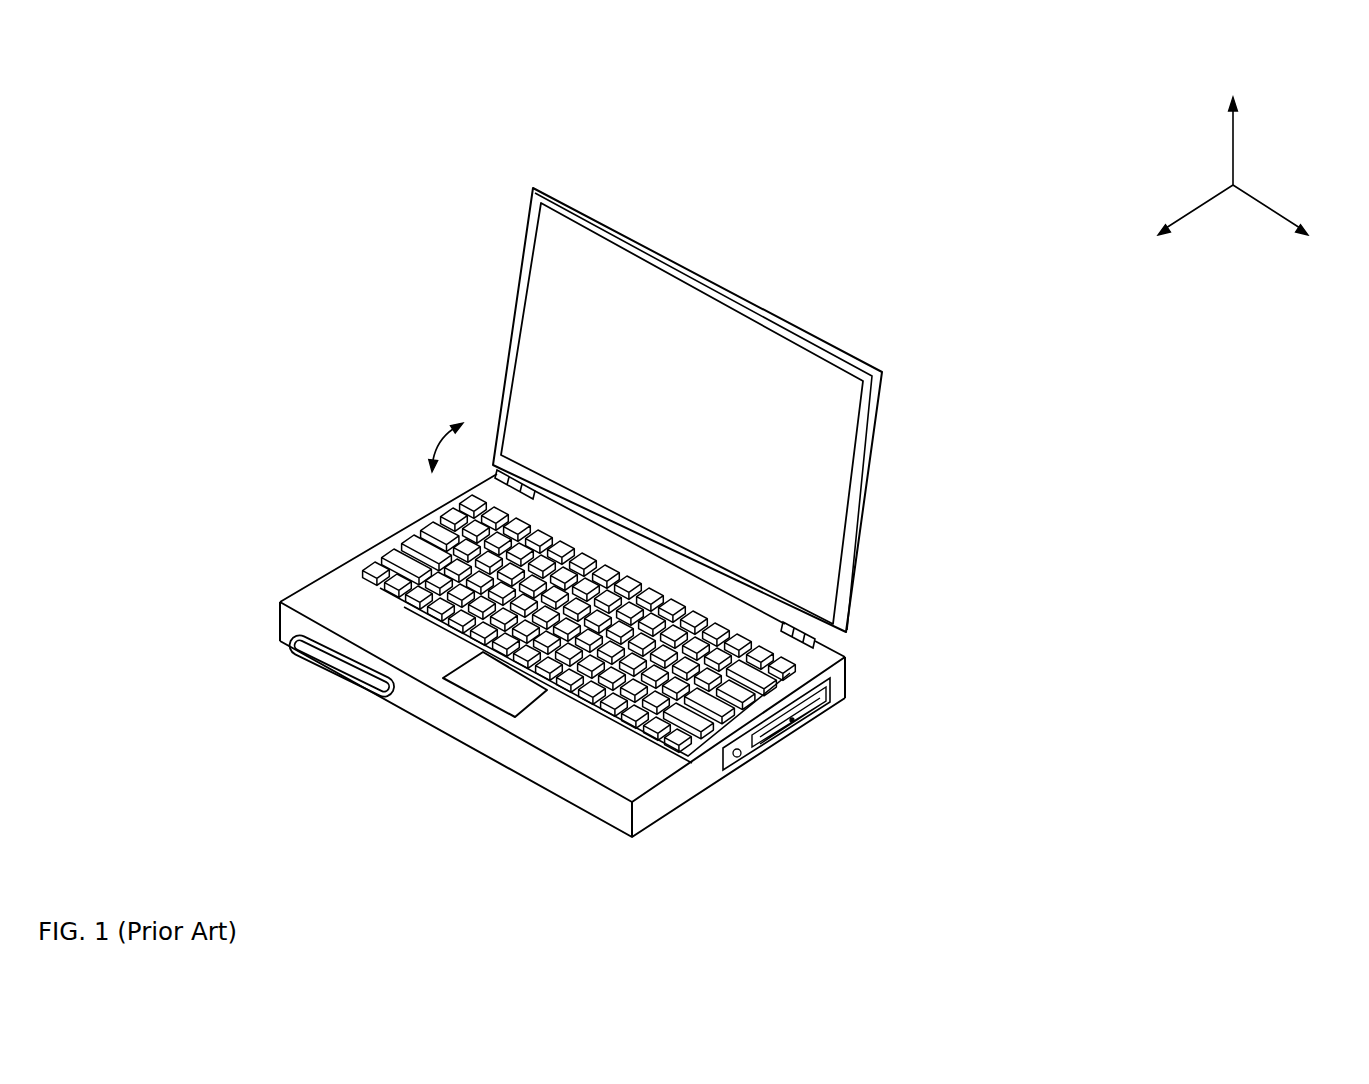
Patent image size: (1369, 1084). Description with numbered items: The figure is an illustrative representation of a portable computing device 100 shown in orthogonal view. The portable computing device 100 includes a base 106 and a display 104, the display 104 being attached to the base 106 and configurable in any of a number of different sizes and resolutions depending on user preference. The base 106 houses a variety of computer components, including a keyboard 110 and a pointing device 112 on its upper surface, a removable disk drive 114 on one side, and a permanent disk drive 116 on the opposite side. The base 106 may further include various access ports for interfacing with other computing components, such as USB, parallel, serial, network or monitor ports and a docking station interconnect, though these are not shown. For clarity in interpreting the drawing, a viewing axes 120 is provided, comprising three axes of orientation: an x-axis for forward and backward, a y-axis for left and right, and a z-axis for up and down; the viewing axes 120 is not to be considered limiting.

The portable computing device 100 is at (409, 216).
The display 104 is at (818, 333).
The base 106 is at (677, 810).
The keyboard 110 is at (430, 523).
The pointing device 112 is at (503, 718).
The removable disk drive 114 is at (800, 720).
The permanent disk drive 116 is at (290, 647).
The viewing axes 120 is at (1300, 142).